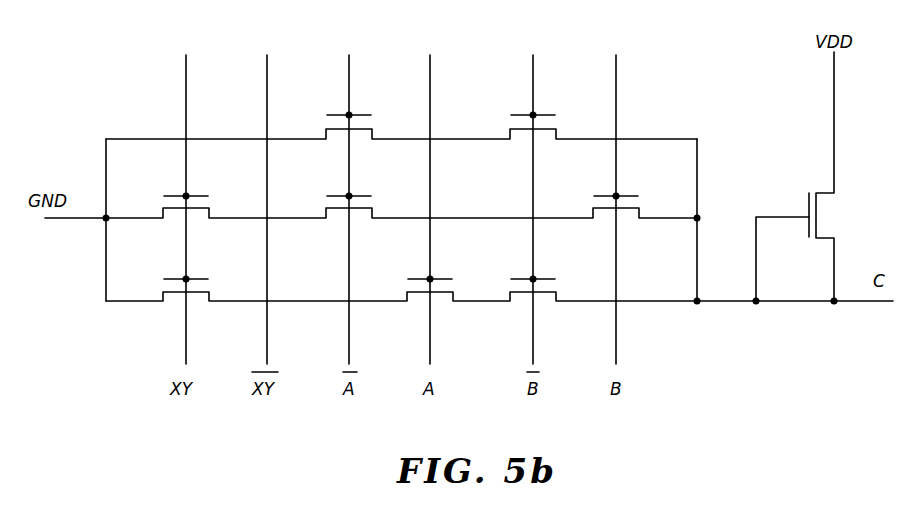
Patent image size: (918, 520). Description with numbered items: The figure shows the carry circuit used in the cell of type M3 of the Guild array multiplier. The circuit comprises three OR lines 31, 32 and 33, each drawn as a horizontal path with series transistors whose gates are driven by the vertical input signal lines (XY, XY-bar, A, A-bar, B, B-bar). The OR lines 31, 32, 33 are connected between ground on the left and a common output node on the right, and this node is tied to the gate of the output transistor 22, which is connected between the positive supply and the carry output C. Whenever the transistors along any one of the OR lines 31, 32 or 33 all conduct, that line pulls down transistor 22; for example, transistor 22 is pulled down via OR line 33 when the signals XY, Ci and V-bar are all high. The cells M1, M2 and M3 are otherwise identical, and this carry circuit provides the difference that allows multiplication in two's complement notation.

The transistor 22 is at (821, 219).
The OR line 31 is at (122, 139).
The OR line 32 is at (115, 217).
The OR line 33 is at (113, 302).